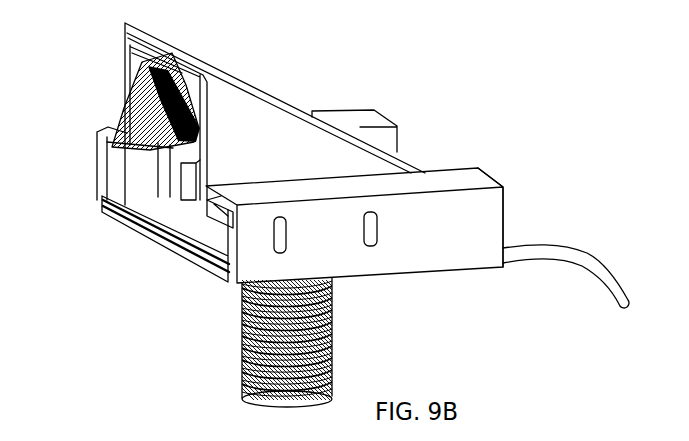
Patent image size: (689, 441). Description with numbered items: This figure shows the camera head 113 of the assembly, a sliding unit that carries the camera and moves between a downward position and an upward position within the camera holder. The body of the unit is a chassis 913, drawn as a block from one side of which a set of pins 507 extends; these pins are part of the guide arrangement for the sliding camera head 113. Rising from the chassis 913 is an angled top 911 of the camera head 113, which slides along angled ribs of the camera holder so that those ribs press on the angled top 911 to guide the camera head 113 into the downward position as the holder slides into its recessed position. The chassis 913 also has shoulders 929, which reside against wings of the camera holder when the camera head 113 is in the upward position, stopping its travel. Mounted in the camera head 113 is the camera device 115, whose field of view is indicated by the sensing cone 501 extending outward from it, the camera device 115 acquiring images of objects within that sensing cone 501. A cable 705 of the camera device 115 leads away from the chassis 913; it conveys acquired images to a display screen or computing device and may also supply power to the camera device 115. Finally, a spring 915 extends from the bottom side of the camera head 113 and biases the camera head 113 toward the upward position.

The camera head 113 is at (128, 38).
The sensing cone 501 is at (117, 103).
The angled top 911 is at (247, 86).
The shoulders 929 is at (372, 117).
The chassis 913 is at (447, 232).
The pins 507 is at (367, 242).
The cable 705 is at (557, 245).
The camera device 115 is at (140, 197).
The spring 915 is at (262, 344).